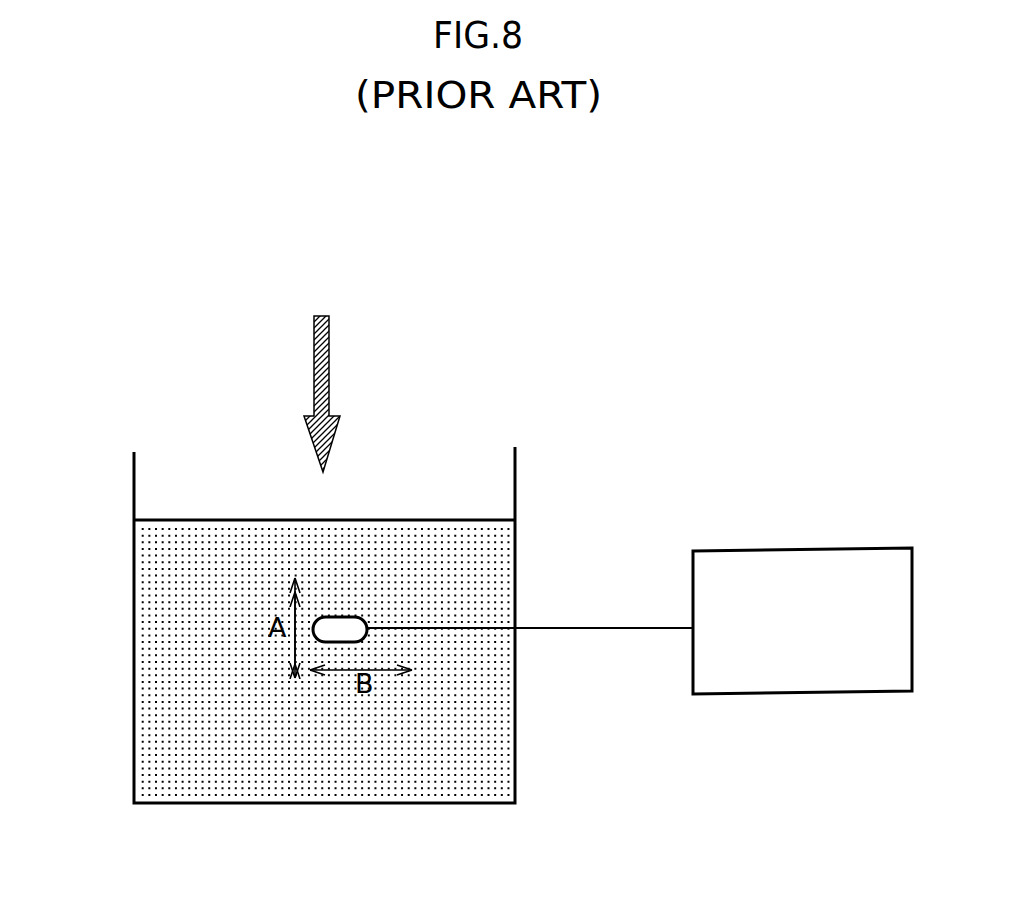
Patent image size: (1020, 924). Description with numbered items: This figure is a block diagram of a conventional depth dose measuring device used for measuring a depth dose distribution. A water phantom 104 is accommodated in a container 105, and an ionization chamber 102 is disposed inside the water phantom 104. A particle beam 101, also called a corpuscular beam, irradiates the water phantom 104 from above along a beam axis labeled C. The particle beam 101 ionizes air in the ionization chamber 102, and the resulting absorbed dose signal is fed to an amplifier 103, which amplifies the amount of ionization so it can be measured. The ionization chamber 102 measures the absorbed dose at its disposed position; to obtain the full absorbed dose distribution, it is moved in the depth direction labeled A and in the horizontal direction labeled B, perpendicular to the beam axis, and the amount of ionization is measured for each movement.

The particle beam 101 is at (329, 362).
The ionization chamber 102 is at (342, 630).
The amplifier 103 is at (803, 551).
The water phantom 104 is at (317, 779).
The container 105 is at (135, 657).